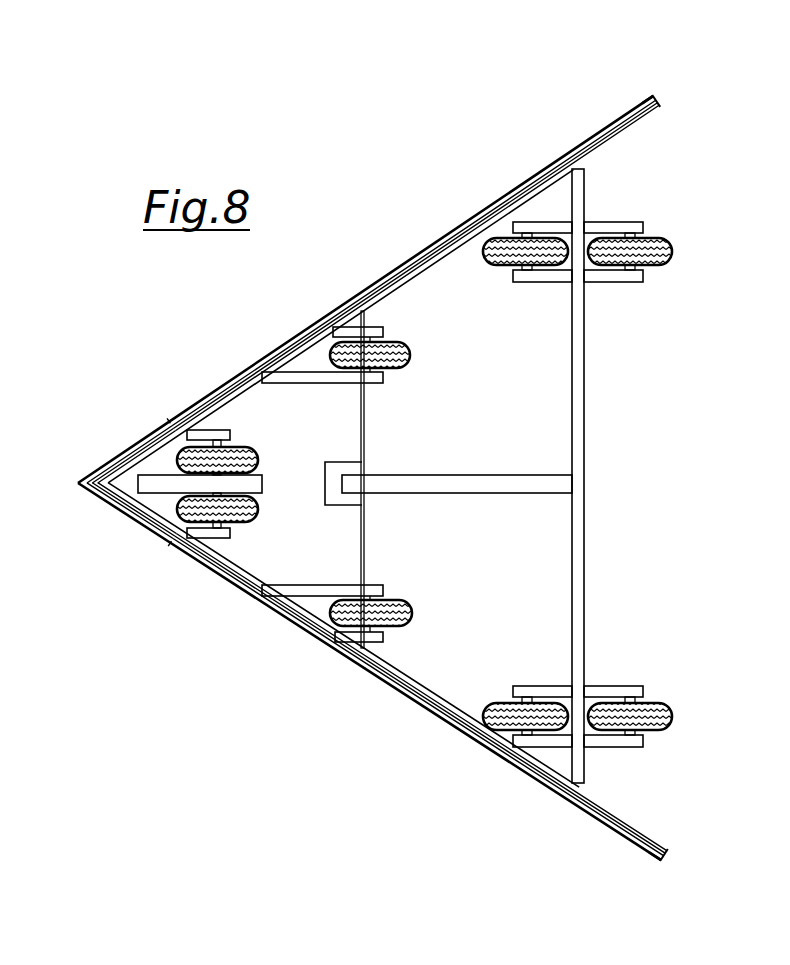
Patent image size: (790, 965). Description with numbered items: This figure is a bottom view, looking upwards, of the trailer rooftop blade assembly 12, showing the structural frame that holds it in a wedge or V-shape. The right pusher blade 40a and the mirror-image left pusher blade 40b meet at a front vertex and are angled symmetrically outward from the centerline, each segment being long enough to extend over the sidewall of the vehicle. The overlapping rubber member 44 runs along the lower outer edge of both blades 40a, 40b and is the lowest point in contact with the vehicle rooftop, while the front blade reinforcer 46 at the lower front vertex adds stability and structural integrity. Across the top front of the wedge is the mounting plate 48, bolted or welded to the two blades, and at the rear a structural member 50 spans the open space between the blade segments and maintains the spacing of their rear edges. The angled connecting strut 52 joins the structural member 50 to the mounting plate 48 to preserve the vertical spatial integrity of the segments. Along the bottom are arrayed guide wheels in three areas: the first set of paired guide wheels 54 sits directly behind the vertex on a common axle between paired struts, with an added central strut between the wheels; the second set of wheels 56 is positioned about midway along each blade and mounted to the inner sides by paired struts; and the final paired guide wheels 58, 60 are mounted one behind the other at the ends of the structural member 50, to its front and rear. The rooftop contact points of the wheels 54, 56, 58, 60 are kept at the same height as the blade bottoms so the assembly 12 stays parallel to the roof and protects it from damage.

The trailer rooftop blade assembly 12 is at (136, 306).
The right pusher blade 40a is at (657, 105).
The left pusher blade 40b is at (640, 853).
The overlapping rubber member 44 is at (515, 189).
The front blade reinforcer 46 is at (115, 453).
The mounting plate 48 is at (352, 443).
The structural member 50 is at (579, 391).
The angled connecting strut 52 is at (552, 487).
The first set of paired guide wheels 54 is at (245, 448).
The second set of wheels 56 is at (410, 345).
The paired guide wheels 58 is at (670, 717).
The paired guide wheels 60 is at (670, 242).